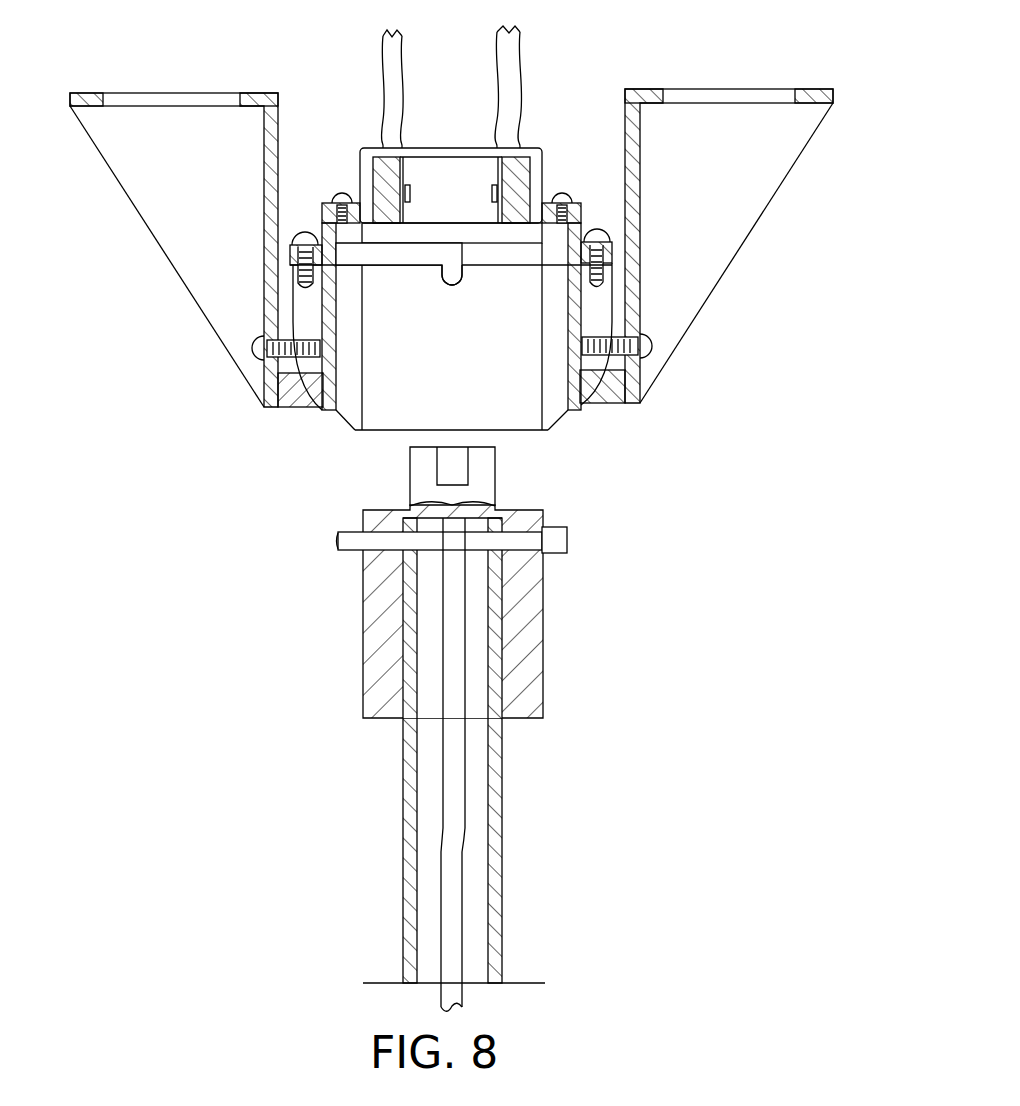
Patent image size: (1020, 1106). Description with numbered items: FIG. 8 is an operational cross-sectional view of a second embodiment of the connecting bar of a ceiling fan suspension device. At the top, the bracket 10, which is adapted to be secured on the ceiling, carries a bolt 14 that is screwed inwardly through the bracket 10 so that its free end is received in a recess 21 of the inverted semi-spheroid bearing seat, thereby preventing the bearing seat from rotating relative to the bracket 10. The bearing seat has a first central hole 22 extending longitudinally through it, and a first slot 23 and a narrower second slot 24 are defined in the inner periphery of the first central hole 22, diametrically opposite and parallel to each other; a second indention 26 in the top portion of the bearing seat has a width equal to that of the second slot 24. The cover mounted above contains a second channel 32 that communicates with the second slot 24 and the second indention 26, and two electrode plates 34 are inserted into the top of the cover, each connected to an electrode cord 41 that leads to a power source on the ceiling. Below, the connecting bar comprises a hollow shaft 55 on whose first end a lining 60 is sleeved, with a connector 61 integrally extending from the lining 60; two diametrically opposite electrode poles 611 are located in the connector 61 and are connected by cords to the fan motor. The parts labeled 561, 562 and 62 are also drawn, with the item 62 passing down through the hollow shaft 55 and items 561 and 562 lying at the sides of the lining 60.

The bracket 10 is at (180, 300).
The bolt 14 is at (650, 347).
The recess 21 is at (603, 305).
The first central hole 22 is at (524, 413).
The first slot 23 is at (556, 405).
The second slot 24 is at (346, 413).
The second indention 26 is at (456, 274).
The second channel 32 is at (398, 257).
The electrode plate 34 is at (418, 187).
The electrode cord 41 is at (512, 65).
The hollow shaft 55 is at (502, 780).
The lining 60 is at (560, 640).
The connector 61 is at (421, 490).
The electrode pole 611 is at (440, 465).
The bolt head 561 is at (568, 535).
The bolt end 562 is at (340, 548).
The wire 62 is at (456, 855).